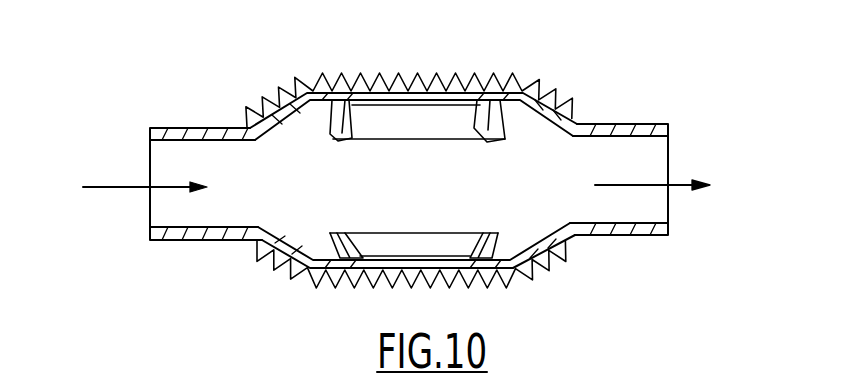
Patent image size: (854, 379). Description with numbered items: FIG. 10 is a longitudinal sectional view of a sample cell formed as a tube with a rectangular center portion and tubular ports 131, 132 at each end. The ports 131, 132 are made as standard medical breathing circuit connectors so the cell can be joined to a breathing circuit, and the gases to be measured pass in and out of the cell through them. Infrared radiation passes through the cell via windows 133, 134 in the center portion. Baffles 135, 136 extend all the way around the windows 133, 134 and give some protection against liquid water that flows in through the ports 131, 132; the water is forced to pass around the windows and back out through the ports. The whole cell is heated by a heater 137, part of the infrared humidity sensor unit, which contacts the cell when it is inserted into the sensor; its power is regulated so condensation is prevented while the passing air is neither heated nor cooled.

The tubular port 131 is at (162, 163).
The tubular port 132 is at (650, 160).
The window 133 is at (445, 97).
The window 134 is at (458, 262).
The baffle 135 is at (477, 136).
The baffle 136 is at (500, 200).
The heater 137 is at (322, 72).